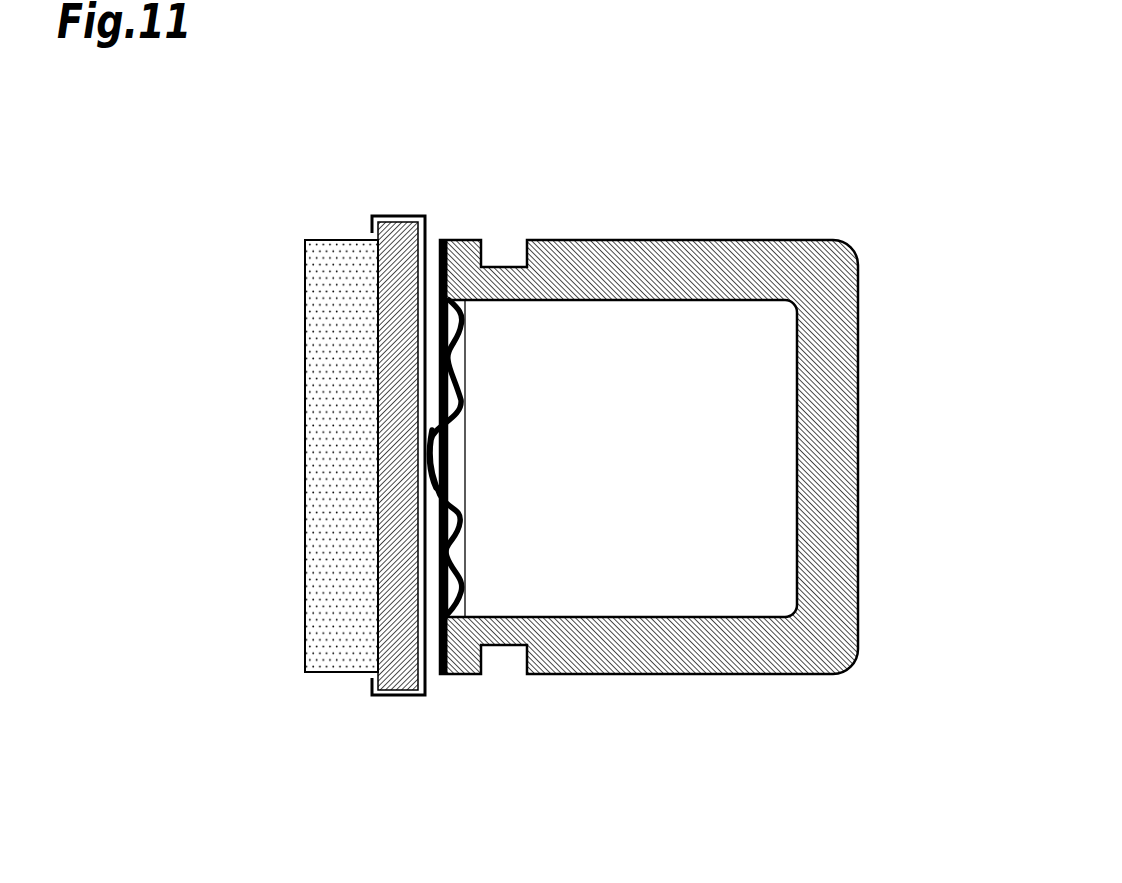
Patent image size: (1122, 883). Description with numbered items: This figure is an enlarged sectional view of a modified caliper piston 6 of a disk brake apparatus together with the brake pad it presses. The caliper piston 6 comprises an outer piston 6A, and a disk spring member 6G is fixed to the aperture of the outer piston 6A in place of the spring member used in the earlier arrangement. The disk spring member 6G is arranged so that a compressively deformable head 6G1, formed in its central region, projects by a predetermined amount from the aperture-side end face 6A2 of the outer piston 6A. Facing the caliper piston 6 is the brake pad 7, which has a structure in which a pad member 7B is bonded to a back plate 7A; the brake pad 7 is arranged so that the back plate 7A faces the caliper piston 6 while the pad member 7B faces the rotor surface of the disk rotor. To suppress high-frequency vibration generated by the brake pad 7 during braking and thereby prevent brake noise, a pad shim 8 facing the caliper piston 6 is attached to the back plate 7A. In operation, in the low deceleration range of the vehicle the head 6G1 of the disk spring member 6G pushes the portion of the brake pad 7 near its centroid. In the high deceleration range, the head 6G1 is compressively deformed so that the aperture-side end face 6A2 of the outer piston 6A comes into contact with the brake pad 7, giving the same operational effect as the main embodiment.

The caliper piston 6 is at (841, 232).
The outer piston 6A is at (696, 240).
The aperture-side end face 6A2 is at (440, 525).
The disk spring member 6G is at (467, 540).
The compressively deformable head 6G1 is at (430, 428).
The brake pad 7 is at (378, 372).
The back plate 7A is at (398, 222).
The pad member 7B is at (342, 240).
The pad shim 8 is at (396, 695).